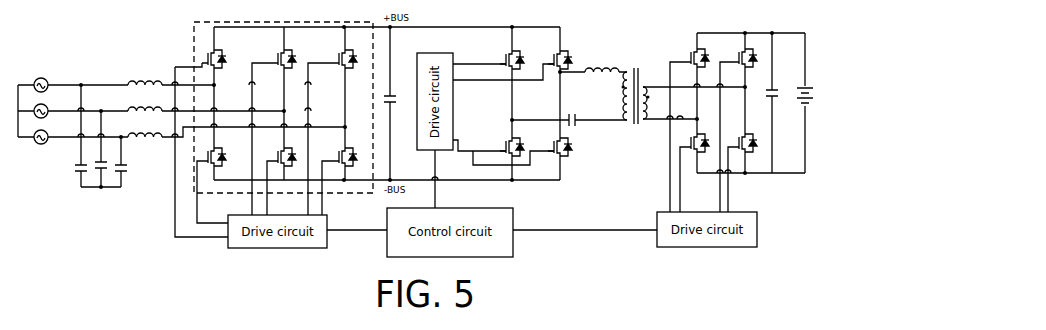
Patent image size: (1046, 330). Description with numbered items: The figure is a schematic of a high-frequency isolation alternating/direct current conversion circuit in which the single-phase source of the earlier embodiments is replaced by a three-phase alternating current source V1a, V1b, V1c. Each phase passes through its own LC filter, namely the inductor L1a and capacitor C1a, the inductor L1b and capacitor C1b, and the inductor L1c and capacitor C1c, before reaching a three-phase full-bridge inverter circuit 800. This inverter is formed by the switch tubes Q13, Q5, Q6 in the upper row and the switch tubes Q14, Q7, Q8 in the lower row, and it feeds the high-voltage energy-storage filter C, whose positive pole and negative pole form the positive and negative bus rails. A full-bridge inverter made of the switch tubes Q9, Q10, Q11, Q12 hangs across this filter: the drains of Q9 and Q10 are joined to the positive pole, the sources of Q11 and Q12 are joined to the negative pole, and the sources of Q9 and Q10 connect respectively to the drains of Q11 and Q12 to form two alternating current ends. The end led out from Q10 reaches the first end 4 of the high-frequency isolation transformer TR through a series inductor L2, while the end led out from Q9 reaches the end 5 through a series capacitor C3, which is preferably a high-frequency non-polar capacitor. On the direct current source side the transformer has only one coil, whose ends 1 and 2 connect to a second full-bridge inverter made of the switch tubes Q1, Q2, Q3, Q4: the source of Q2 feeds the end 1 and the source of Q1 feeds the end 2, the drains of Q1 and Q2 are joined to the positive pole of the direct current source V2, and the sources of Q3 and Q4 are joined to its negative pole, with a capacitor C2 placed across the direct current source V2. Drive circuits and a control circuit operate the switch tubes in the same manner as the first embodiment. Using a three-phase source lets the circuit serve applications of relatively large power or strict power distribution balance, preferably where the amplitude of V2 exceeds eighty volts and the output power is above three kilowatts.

The three-phase full-bridge inverter circuit 800 is at (194, 59).
The three-phase alternating current source V1a is at (55, 81).
The three-phase alternating current source V1b is at (55, 107).
The three-phase alternating current source V1c is at (55, 133).
The inductor L1a is at (145, 78).
The inductor L1b is at (145, 104).
The inductor L1c is at (145, 130).
The capacitor C1a is at (74, 136).
The capacitor C1b is at (96, 149).
The capacitor C1c is at (127, 162).
The switch tube Q13 is at (209, 56).
The switch tube Q5 is at (279, 121).
The switch tube Q6 is at (339, 121).
The switch tube Q14 is at (219, 154).
The switch tube Q7 is at (287, 163).
The switch tube Q8 is at (345, 171).
The high-voltage energy-storage filter C is at (392, 103).
The switch tube Q9 is at (496, 73).
The switch tube Q10 is at (519, 81).
The switch tube Q11 is at (488, 150).
The switch tube Q12 is at (535, 157).
The inductor L2 is at (593, 64).
The capacitor C3 is at (569, 113).
The high-frequency isolation transformer TR is at (635, 91).
The first end of the high-frequency isolation transformer at the direct current sour 1 is at (694, 81).
The second end of the high-frequency isolation transformer at the direct current sou 2 is at (670, 113).
The first end of the high-frequency isolation transformer at the alternating current 4 is at (615, 84).
The first end of the high-frequency isolation transformer at the alternating current 5 is at (615, 112).
The switch tube Q1 is at (689, 122).
The switch tube Q2 is at (738, 122).
The switch tube Q3 is at (694, 165).
The switch tube Q4 is at (742, 171).
The capacitor C2 is at (767, 103).
The direct current source V2 is at (795, 103).